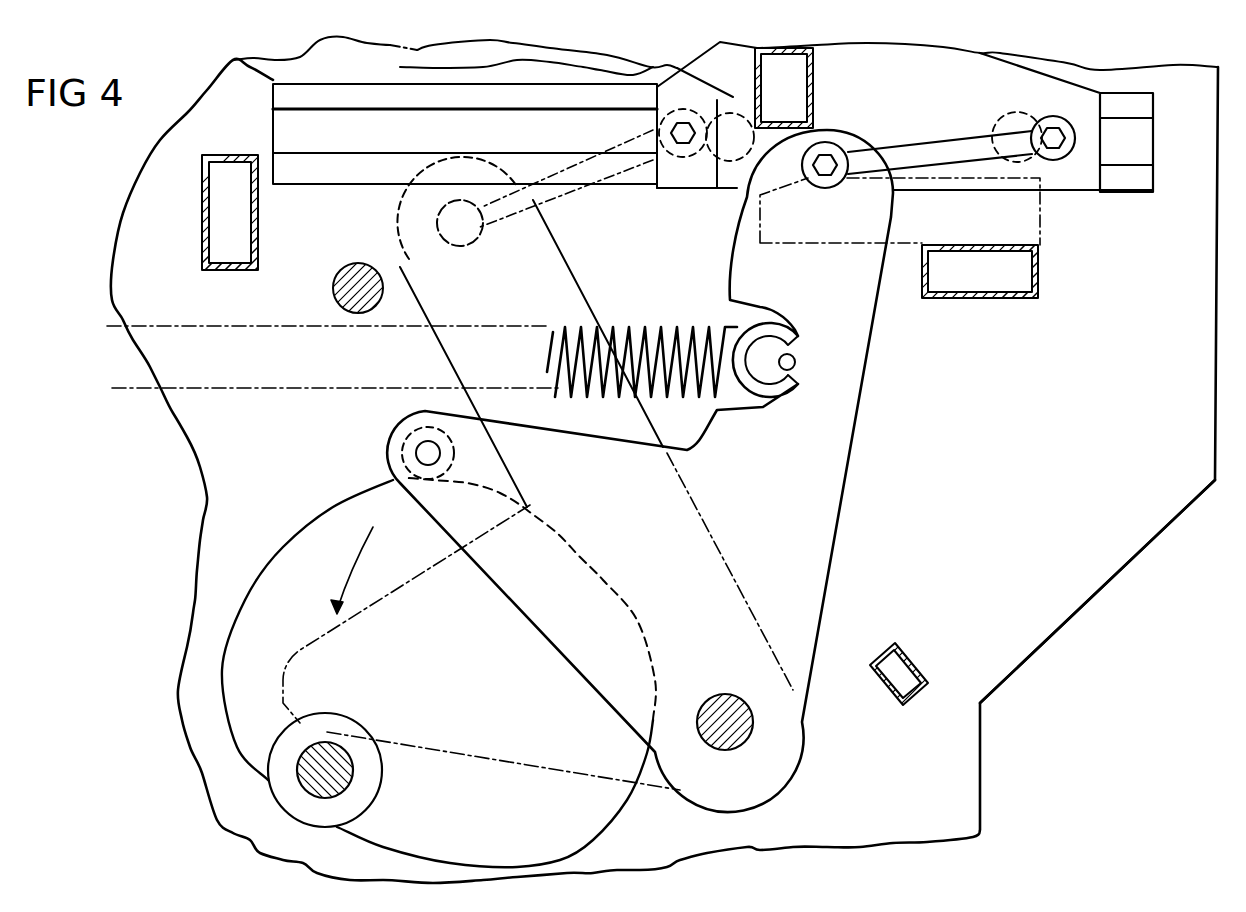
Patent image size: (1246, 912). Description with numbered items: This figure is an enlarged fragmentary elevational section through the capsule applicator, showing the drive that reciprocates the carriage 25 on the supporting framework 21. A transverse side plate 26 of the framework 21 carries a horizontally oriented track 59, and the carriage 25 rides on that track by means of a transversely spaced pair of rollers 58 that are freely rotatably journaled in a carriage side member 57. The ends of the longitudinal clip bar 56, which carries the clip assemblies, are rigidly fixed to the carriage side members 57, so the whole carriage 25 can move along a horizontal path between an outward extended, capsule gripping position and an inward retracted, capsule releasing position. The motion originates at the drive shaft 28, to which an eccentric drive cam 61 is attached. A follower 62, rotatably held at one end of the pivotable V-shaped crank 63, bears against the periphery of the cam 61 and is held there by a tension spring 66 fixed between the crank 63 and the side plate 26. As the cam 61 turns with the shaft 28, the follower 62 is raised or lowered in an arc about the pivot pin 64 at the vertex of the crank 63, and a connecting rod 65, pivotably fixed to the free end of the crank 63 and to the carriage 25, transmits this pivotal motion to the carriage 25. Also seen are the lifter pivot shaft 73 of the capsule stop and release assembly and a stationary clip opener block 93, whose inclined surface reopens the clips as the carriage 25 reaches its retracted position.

The supporting framework 21 is at (1126, 558).
The carriage 25 is at (1074, 197).
The side plate 26 is at (1068, 588).
The drive shaft 28 is at (345, 771).
The clip bar 56 is at (813, 104).
The carriage side member 57 is at (670, 110).
The roller 58 is at (726, 130).
The track 59 is at (358, 175).
The eccentric drive cam 61 is at (305, 525).
The follower 62 is at (405, 452).
The V-shaped crank 63 is at (843, 378).
The pivot pin 64 is at (747, 730).
The connecting rod 65 is at (893, 152).
The tension spring 66 is at (683, 330).
The lifter pivot shaft 73 is at (343, 312).
The clip opener block 93 is at (1030, 232).